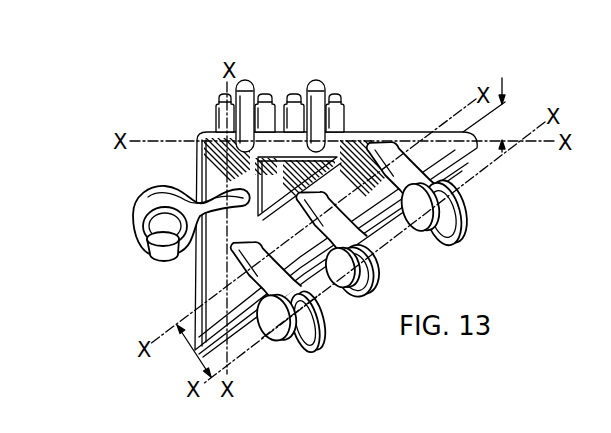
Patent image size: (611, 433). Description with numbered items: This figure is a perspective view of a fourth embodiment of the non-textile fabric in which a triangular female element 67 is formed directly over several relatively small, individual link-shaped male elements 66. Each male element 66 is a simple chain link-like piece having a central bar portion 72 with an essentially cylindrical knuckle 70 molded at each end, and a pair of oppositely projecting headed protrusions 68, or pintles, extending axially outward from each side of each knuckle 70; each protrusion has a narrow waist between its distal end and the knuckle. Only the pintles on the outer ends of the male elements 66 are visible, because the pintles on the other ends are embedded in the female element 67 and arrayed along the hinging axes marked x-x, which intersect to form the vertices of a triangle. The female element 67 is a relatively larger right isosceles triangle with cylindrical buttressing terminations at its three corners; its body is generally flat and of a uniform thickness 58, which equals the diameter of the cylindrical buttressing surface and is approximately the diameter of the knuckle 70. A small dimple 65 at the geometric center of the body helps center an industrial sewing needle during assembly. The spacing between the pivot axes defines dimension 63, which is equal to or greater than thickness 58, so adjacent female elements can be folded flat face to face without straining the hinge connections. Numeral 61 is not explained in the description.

The thickness dimension 58 is at (495, 115).
The bolt 61 is at (272, 356).
The dimension 63 is at (189, 351).
The dimple 65 is at (289, 205).
The male element 66 is at (306, 242).
The female element 67 is at (355, 135).
The headed protrusion 68 is at (150, 252).
The knuckle 70 is at (138, 203).
The central bar portion 72 is at (181, 190).